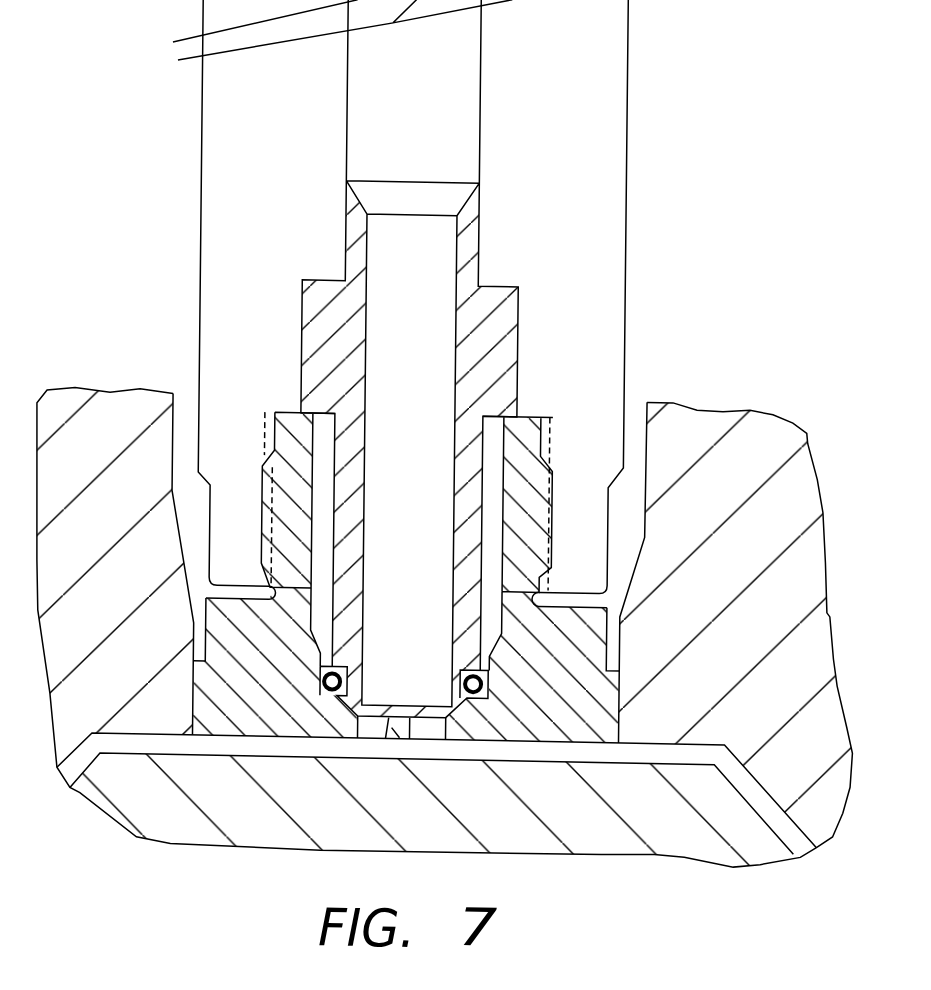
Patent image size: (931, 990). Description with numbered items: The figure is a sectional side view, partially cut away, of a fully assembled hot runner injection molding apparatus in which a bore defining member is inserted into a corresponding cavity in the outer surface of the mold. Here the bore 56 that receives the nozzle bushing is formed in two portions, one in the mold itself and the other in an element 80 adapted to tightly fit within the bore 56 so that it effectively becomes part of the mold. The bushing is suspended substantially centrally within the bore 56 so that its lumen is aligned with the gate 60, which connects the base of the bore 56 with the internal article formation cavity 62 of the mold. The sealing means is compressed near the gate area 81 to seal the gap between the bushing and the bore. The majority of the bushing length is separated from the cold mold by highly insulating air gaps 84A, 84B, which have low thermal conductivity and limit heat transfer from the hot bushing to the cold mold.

The bore 56 is at (503, 541).
The gate 60 is at (412, 727).
The article formation cavity 62 is at (728, 757).
The element 80 is at (229, 672).
The gate area 81 is at (402, 708).
The air gap 84A is at (179, 434).
The air gap 84B is at (322, 457).